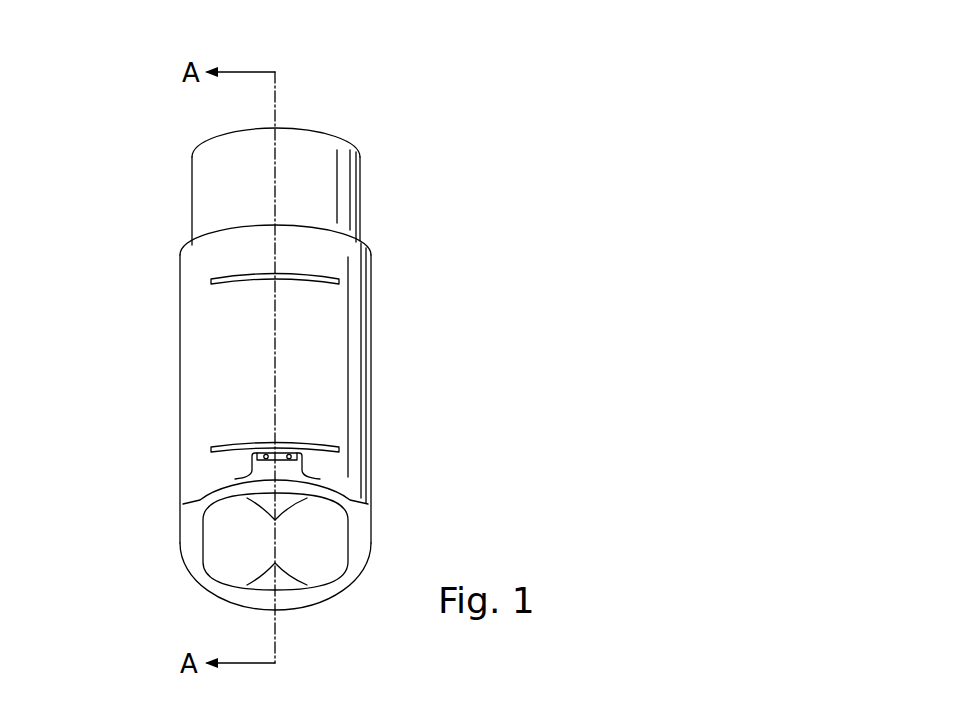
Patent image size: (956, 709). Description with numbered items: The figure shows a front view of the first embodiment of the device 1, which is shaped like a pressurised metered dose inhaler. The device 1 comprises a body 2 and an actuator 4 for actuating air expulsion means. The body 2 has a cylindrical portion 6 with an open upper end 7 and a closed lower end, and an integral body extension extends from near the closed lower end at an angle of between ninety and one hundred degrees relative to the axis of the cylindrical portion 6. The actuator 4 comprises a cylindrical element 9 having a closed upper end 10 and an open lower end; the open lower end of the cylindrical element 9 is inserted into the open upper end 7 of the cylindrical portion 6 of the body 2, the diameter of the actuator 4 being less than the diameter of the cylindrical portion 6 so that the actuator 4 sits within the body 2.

The device 1 is at (507, 98).
The body 2 is at (380, 323).
The actuator 4 is at (173, 150).
The cylindrical portion 6 is at (333, 385).
The open upper end 7 is at (367, 245).
The cylindrical element 9 is at (212, 210).
The closed upper end 10 is at (332, 133).